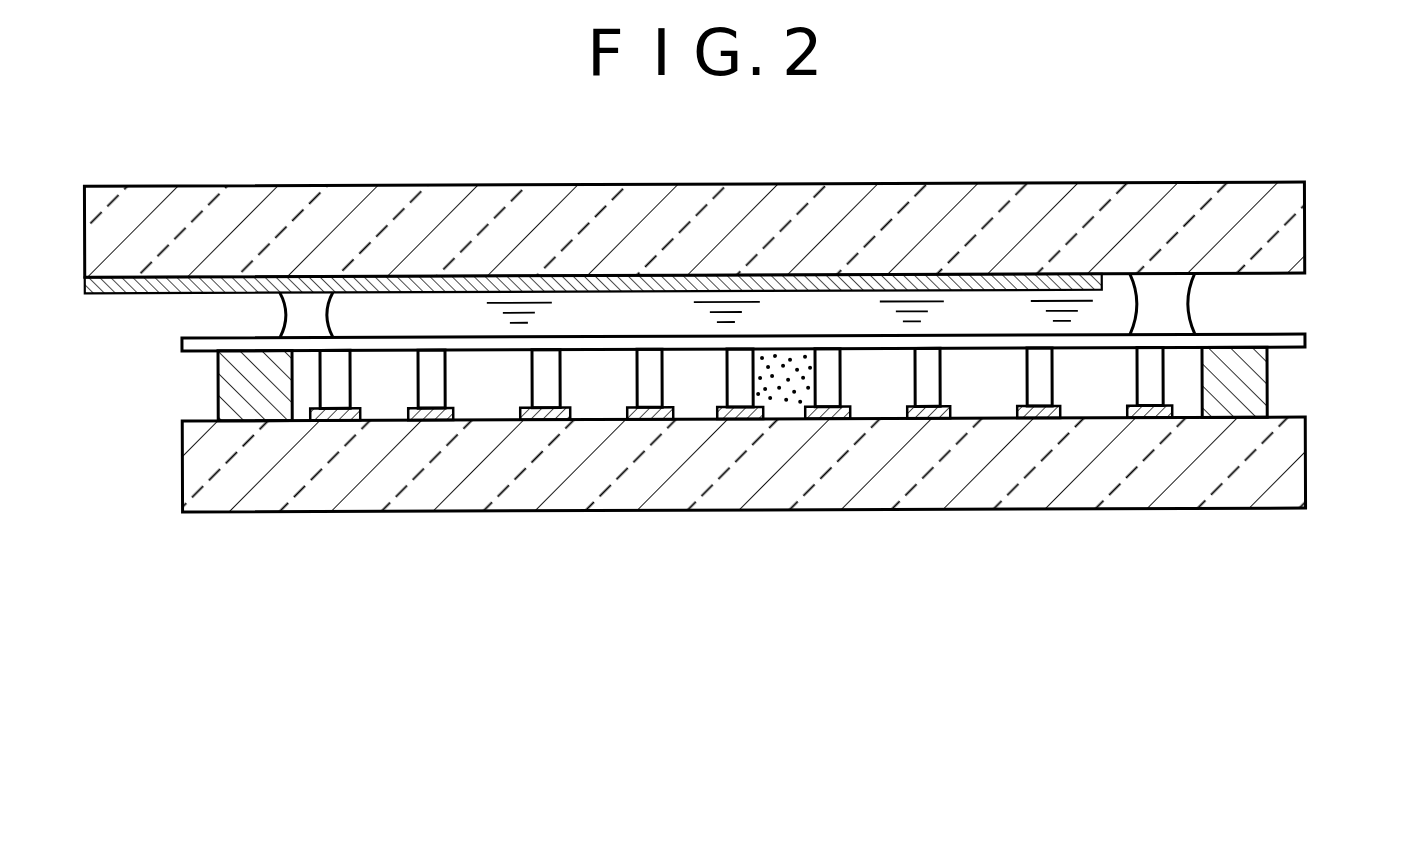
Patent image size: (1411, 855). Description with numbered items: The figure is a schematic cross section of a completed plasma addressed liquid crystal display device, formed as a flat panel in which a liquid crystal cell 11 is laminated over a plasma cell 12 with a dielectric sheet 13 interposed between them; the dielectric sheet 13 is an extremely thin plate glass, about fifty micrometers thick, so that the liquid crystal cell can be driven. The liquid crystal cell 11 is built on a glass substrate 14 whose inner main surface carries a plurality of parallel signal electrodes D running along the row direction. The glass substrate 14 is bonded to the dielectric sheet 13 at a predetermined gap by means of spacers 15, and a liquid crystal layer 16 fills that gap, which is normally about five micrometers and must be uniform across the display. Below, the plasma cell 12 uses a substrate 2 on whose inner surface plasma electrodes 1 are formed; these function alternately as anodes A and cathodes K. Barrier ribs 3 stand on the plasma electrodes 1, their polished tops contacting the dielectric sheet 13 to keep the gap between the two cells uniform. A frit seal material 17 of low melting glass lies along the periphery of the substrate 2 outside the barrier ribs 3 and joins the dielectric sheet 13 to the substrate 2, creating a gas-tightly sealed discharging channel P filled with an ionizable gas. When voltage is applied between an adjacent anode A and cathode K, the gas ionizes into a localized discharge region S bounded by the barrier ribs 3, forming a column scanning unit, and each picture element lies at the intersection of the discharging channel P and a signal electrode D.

The plasma electrodes 1 is at (784, 521).
The substrate 2 is at (1020, 487).
The barrier ribs 3 is at (560, 372).
The liquid crystal cell 11 is at (743, 236).
The plasma cell 12 is at (764, 385).
The dielectric sheet 13 is at (1307, 341).
The glass substrate 14 is at (829, 215).
The spacers 15 is at (1168, 297).
The liquid crystal layer 16 is at (977, 310).
The frit seal material 17 is at (232, 390).
The anode A is at (740, 420).
The cathode K is at (828, 420).
The signal electrodes D is at (411, 286).
The discharge region S is at (782, 362).
The discharging channel P is at (480, 400).